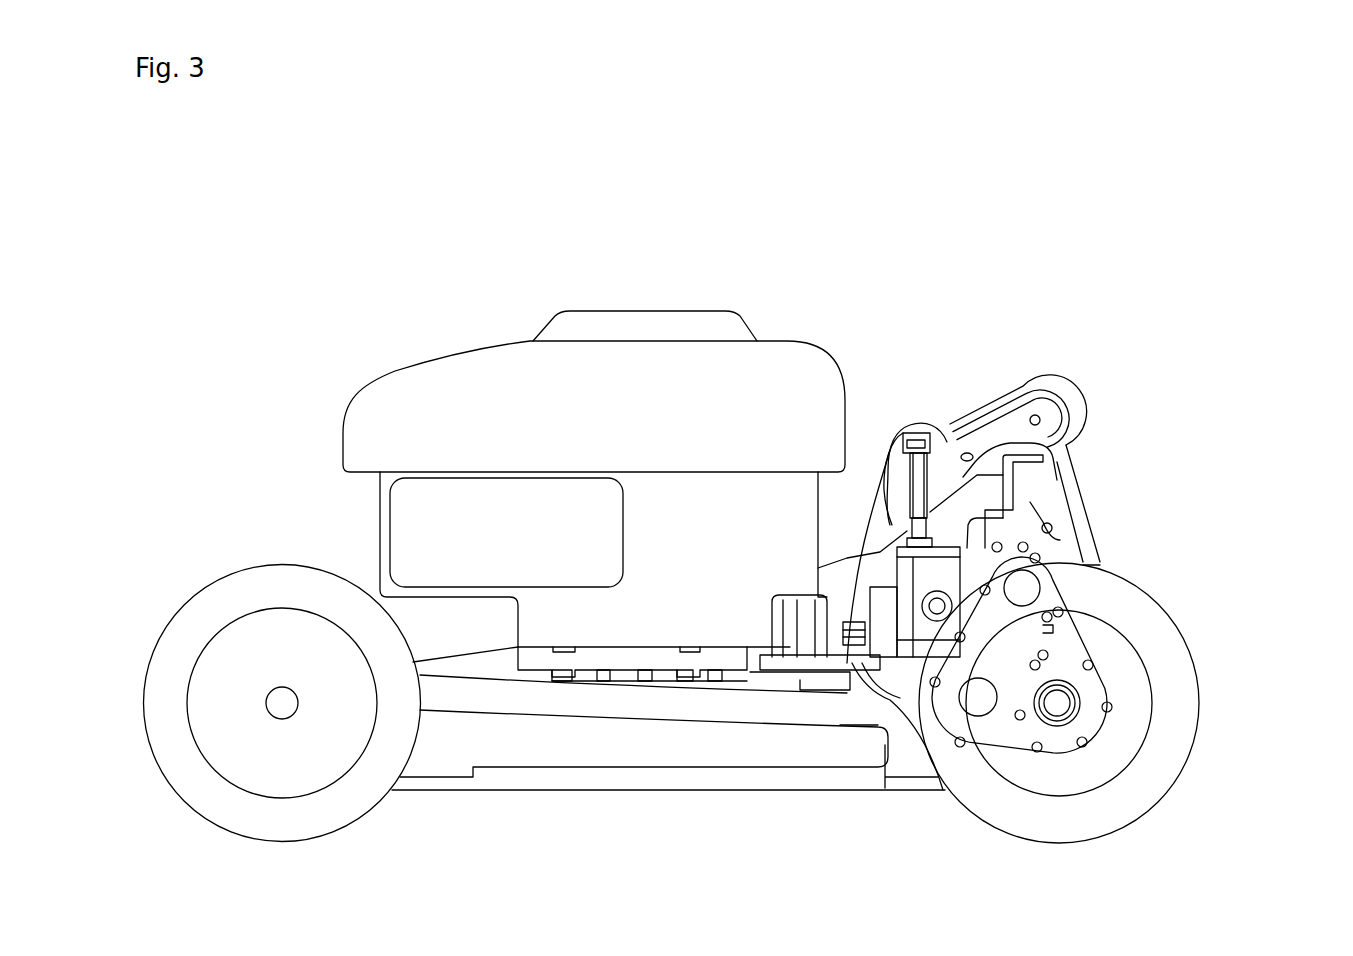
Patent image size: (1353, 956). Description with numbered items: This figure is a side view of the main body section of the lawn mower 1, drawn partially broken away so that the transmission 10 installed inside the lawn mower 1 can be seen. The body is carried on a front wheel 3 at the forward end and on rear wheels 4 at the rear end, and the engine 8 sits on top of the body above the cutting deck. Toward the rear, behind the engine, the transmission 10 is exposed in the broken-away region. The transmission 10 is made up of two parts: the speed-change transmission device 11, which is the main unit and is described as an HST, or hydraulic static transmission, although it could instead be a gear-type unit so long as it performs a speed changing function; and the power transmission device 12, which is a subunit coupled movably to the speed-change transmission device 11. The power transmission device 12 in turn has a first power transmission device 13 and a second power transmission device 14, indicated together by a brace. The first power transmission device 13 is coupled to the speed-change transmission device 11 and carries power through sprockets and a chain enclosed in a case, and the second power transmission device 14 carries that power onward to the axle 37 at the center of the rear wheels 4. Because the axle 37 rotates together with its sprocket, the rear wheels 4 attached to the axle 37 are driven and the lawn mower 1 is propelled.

The lawn mower 1 is at (780, 272).
The front wheel 3 is at (181, 602).
The rear wheel 4 is at (1199, 703).
The engine 8 is at (425, 363).
The transmission 10 is at (991, 490).
The speed-change transmission device 11 is at (940, 547).
The power transmission device 12 is at (1096, 599).
The first power transmission device 13 is at (1027, 620).
The second power transmission device 14 is at (1070, 667).
The axle 37 is at (1062, 708).